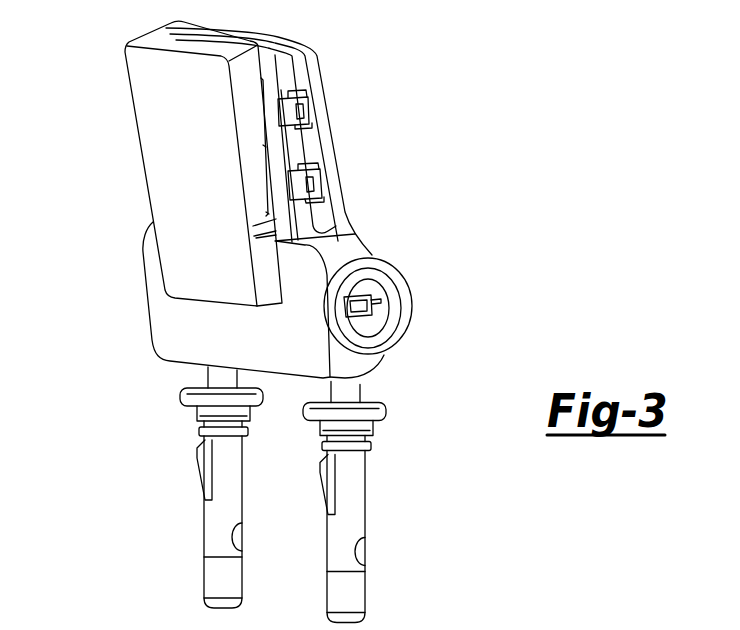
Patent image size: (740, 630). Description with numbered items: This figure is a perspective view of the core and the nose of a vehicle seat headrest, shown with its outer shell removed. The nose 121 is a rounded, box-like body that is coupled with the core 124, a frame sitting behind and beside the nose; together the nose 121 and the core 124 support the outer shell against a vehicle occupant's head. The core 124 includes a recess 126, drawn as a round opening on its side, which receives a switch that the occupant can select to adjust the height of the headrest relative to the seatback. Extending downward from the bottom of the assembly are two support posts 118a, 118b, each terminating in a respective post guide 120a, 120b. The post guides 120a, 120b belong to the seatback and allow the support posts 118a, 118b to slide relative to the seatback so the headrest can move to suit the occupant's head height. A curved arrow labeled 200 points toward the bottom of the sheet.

The nose 121 is at (176, 138).
The core 124 is at (288, 77).
The recess 126 is at (492, 312).
The support post 118a is at (205, 373).
The support post 118b is at (447, 418).
The post guide 120a is at (205, 520).
The post guide 120b is at (368, 508).
The sensor assembly 200 is at (683, 600).